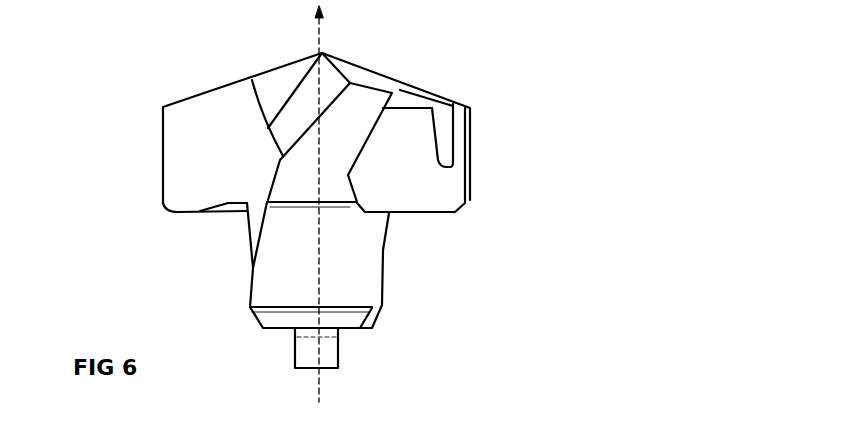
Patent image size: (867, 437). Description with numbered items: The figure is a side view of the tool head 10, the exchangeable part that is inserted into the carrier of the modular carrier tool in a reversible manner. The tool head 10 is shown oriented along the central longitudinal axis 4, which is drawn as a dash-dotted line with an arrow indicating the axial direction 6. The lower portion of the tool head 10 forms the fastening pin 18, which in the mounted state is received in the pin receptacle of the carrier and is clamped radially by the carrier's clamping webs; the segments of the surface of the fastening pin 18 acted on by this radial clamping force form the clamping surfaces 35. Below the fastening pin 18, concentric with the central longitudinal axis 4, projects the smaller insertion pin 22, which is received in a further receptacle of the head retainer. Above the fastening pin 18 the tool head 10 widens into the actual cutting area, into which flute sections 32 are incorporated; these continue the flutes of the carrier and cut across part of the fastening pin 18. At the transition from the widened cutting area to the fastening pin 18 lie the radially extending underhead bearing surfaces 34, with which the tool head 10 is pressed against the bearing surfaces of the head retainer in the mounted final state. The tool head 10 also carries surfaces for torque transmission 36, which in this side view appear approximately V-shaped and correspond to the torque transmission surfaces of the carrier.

The central longitudinal axis 4 is at (370, 203).
The axial direction 6 is at (323, 25).
The tool head 10 is at (553, 200).
The fastening pin 18 is at (350, 271).
The insertion pin 22 is at (332, 353).
The flute sections 32 is at (258, 162).
The underhead bearing surfaces 34 is at (222, 212).
The clamping surfaces 35 is at (277, 267).
The surfaces for torque transmission 36 is at (348, 147).